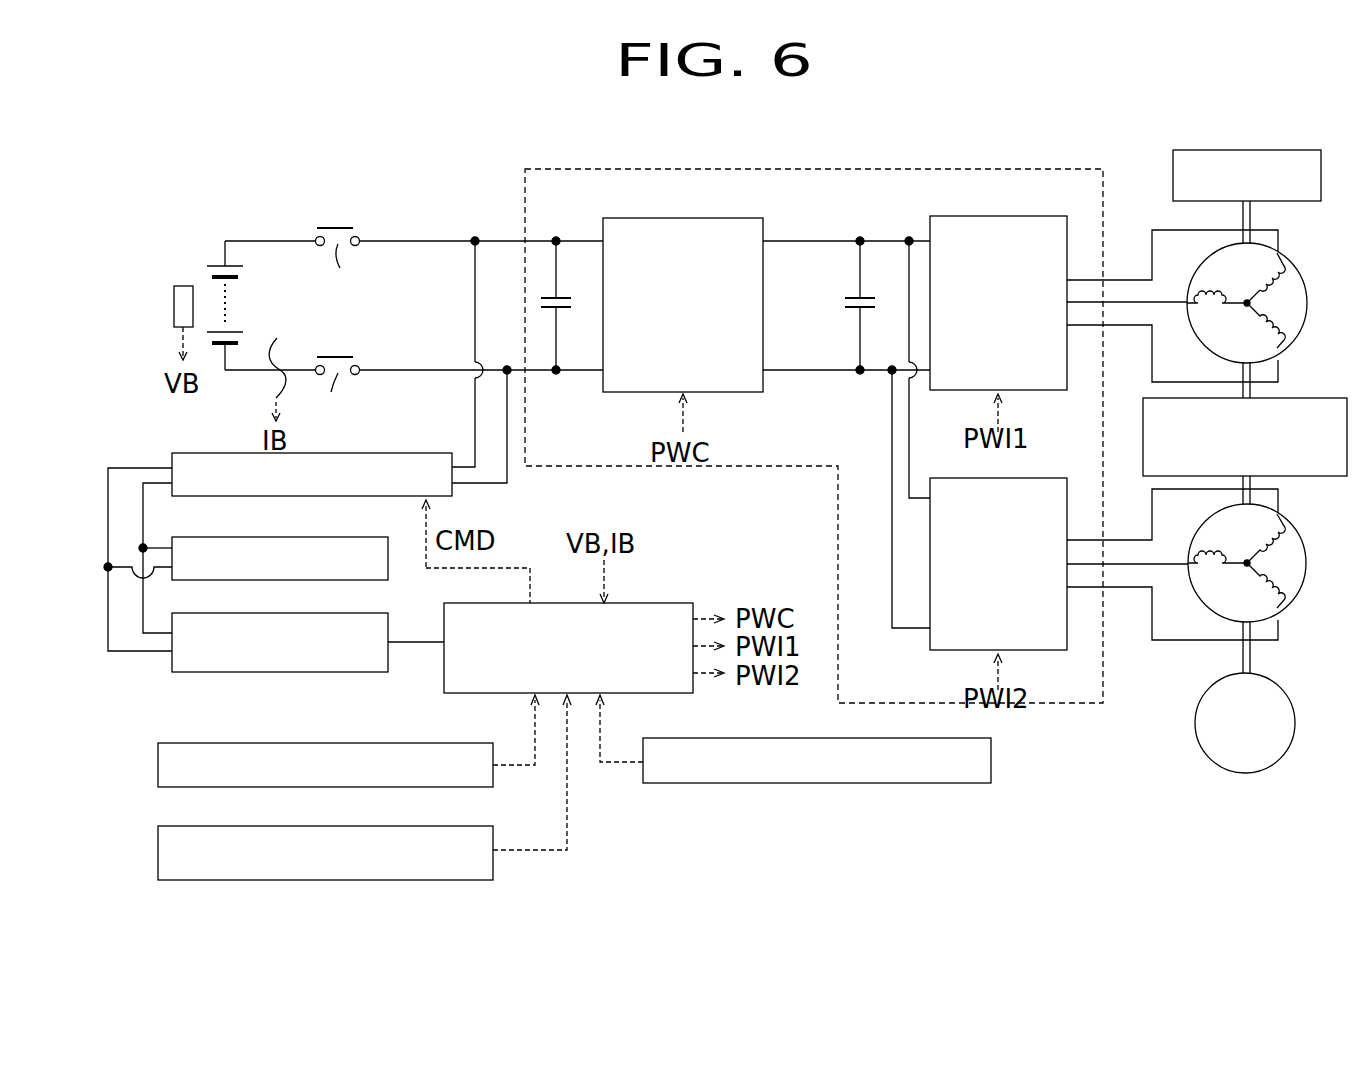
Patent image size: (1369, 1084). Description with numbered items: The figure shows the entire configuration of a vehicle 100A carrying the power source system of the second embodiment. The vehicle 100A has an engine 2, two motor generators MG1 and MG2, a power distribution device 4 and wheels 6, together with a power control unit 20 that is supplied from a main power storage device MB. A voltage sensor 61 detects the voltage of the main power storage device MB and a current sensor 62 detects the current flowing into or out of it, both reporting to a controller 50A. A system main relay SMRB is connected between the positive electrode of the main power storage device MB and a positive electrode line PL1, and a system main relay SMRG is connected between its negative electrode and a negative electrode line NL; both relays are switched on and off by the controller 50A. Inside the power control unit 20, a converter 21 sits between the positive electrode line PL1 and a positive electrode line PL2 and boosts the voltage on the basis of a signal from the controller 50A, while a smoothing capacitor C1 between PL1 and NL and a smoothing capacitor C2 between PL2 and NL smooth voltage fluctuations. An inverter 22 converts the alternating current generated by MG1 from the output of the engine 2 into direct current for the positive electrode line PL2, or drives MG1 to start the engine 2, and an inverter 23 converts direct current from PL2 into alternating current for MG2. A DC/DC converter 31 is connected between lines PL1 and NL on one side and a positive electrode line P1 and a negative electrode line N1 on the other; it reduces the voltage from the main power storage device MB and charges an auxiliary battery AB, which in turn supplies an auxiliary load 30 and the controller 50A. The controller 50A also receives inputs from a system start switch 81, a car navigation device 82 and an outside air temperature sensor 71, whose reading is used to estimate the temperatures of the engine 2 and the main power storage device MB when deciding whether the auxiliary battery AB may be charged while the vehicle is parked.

The vehicle 100A is at (1059, 133).
The power control unit 20 is at (600, 168).
The converter 21 is at (708, 218).
The inverter 22 is at (1022, 216).
The inverter 23 is at (1022, 478).
The engine 2 is at (1297, 150).
The power distribution device 4 is at (1305, 400).
The wheels 6 is at (1295, 722).
The motor generator MG1 is at (1315, 246).
The motor generator MG2 is at (1315, 508).
The main power storage device MB is at (218, 262).
The voltage sensor 61 is at (183, 286).
The current sensor 62 is at (279, 365).
The system main relay SMRB is at (334, 267).
The system main relay SMRG is at (335, 397).
The positive electrode line PL1 is at (415, 240).
The positive electrode line PL2 is at (790, 240).
The negative electrode line NL is at (408, 373).
The smoothing capacitor C1 is at (562, 312).
The smoothing capacitor C2 is at (868, 296).
The DC/DC converter 31 is at (390, 453).
The auxiliary load 30 is at (345, 537).
The auxiliary battery AB is at (345, 613).
The positive electrode line P1 is at (108, 512).
The negative electrode line N1 is at (143, 512).
The controller 50A is at (660, 603).
The system start switch 81 is at (443, 743).
The car navigation device 82 is at (962, 725).
The outside air temperature sensor 71 is at (443, 826).